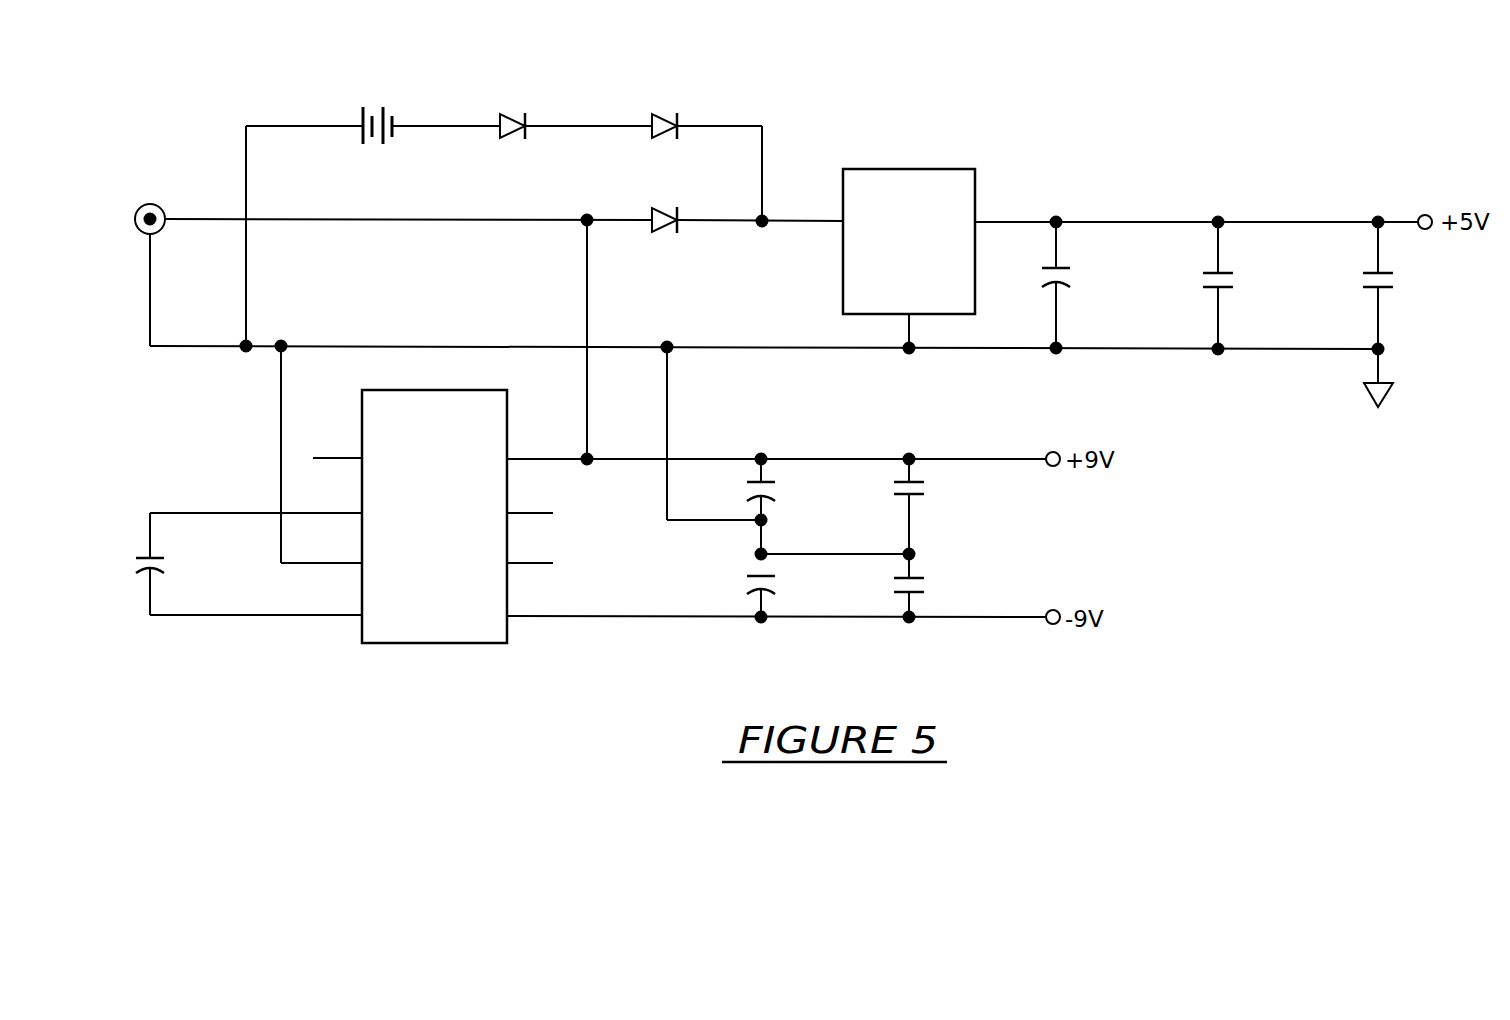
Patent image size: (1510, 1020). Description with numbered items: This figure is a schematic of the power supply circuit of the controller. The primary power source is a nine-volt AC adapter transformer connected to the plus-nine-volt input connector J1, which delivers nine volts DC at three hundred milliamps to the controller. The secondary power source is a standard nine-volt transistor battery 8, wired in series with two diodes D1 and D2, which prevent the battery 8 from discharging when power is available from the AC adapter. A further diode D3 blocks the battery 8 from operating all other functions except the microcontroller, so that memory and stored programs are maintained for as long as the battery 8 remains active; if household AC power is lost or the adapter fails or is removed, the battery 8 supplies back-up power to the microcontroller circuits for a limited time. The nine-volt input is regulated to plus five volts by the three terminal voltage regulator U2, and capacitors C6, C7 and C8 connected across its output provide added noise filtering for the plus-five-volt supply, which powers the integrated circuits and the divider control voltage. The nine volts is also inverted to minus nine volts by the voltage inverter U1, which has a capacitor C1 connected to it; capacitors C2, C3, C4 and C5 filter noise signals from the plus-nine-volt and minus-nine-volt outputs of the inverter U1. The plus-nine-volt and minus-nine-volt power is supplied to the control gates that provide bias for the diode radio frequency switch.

The battery 8 is at (378, 105).
The +9 V In connector J1 is at (157, 215).
The diode D1 is at (520, 123).
The diode D2 is at (673, 123).
The diode D3 is at (676, 223).
The voltage inverter U1 is at (434, 516).
The three terminal voltage regulator U2 is at (909, 242).
The capacitor C1 is at (184, 564).
The capacitor C2 is at (796, 504).
The capacitor C3 is at (796, 589).
The capacitor C4 is at (947, 504).
The capacitor C5 is at (947, 588).
The capacitor C6 is at (1091, 283).
The capacitor C7 is at (1254, 283).
The capacitor C8 is at (1417, 283).